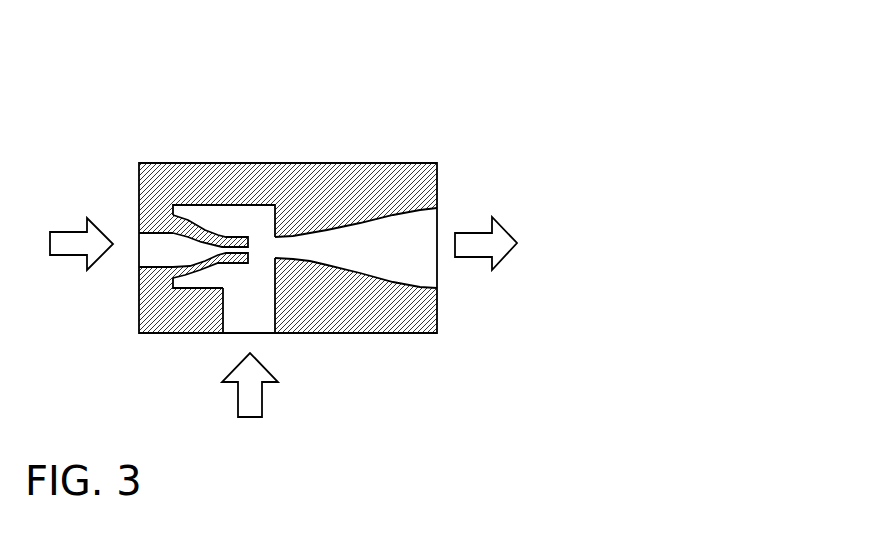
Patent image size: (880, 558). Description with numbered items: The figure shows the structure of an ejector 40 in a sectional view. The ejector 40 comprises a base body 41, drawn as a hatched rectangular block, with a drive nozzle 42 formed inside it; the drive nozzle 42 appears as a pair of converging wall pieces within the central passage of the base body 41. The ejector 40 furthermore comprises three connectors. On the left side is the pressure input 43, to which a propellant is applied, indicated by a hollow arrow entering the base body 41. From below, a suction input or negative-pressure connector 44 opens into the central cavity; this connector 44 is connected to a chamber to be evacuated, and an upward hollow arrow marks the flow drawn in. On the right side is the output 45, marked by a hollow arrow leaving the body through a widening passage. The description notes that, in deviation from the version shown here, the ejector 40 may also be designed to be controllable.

The ejector 40 is at (417, 95).
The base body 41 is at (185, 185).
The drive nozzle 42 is at (226, 238).
The pressure input 43 is at (152, 250).
The suction input 44 is at (255, 333).
The output 45 is at (438, 235).